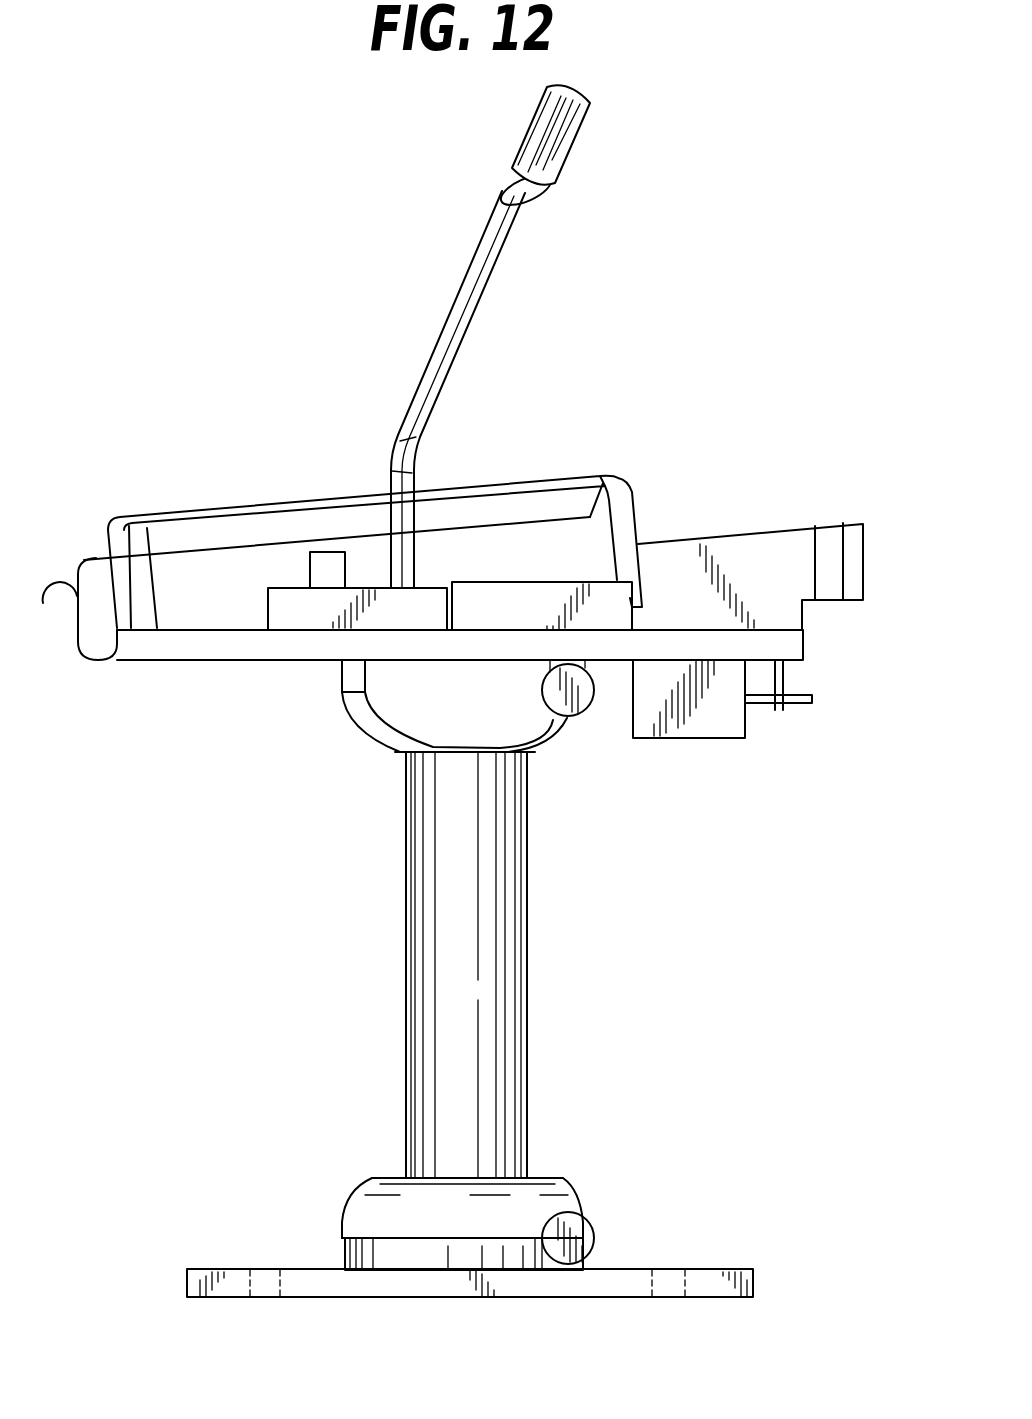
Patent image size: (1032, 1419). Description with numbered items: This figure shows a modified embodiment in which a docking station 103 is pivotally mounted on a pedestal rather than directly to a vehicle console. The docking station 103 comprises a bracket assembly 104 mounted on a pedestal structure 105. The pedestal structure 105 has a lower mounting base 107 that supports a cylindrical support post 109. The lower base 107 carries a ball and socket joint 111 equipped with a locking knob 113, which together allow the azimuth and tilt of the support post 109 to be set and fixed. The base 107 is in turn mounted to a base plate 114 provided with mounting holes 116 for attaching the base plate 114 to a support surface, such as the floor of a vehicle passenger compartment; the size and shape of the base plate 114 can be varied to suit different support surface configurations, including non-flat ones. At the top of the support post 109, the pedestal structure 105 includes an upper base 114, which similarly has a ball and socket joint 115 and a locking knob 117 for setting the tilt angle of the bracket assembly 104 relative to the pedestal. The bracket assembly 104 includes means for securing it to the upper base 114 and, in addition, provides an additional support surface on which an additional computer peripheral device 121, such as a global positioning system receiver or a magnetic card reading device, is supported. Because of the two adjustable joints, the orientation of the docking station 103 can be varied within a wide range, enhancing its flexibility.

The docking station 103 is at (143, 682).
The bracket assembly 104 is at (242, 660).
The pedestal structure 105 is at (548, 917).
The lower mounting base 107 is at (570, 1182).
The cylindrical support post 109 is at (503, 1005).
The ball and socket joint 111 is at (398, 1178).
The locking knob 113 is at (578, 1247).
The base plate 114 is at (352, 700).
The ball and socket joint 115 is at (396, 753).
The mounting holes 116 is at (258, 1270).
The locking knob 117 is at (580, 705).
The computer peripheral device 121 is at (582, 602).